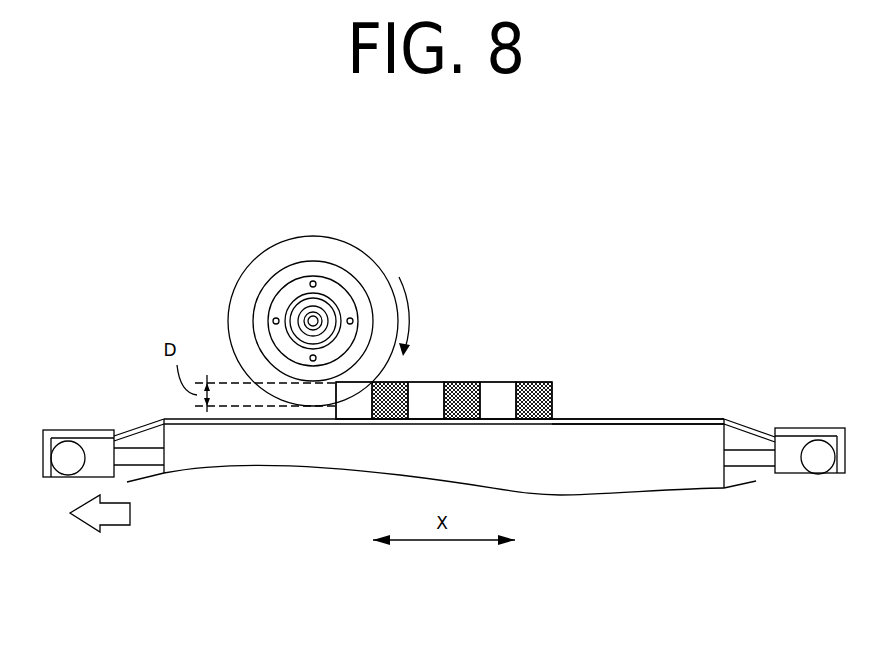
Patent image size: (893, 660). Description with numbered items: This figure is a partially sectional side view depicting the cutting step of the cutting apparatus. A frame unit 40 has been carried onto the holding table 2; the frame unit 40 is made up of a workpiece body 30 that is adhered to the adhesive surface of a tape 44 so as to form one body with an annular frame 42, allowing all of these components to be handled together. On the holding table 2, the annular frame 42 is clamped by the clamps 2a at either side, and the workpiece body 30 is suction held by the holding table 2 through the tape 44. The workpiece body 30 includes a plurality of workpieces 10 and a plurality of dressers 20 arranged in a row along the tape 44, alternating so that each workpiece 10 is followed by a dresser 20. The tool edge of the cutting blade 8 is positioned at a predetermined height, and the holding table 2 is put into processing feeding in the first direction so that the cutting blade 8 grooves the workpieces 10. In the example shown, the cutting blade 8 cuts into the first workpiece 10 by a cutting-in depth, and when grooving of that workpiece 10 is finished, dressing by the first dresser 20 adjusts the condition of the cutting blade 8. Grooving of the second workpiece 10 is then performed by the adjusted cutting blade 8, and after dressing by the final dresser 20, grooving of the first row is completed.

The holding table 2 is at (441, 478).
The clamps 2a is at (70, 428).
The cutting blade 8 is at (382, 252).
The workpieces 10 is at (427, 390).
The dressers 20 is at (466, 390).
The workpiece body 30 is at (592, 334).
The frame unit 40 is at (745, 374).
The annular frame 42 is at (82, 440).
The tape 44 is at (665, 419).